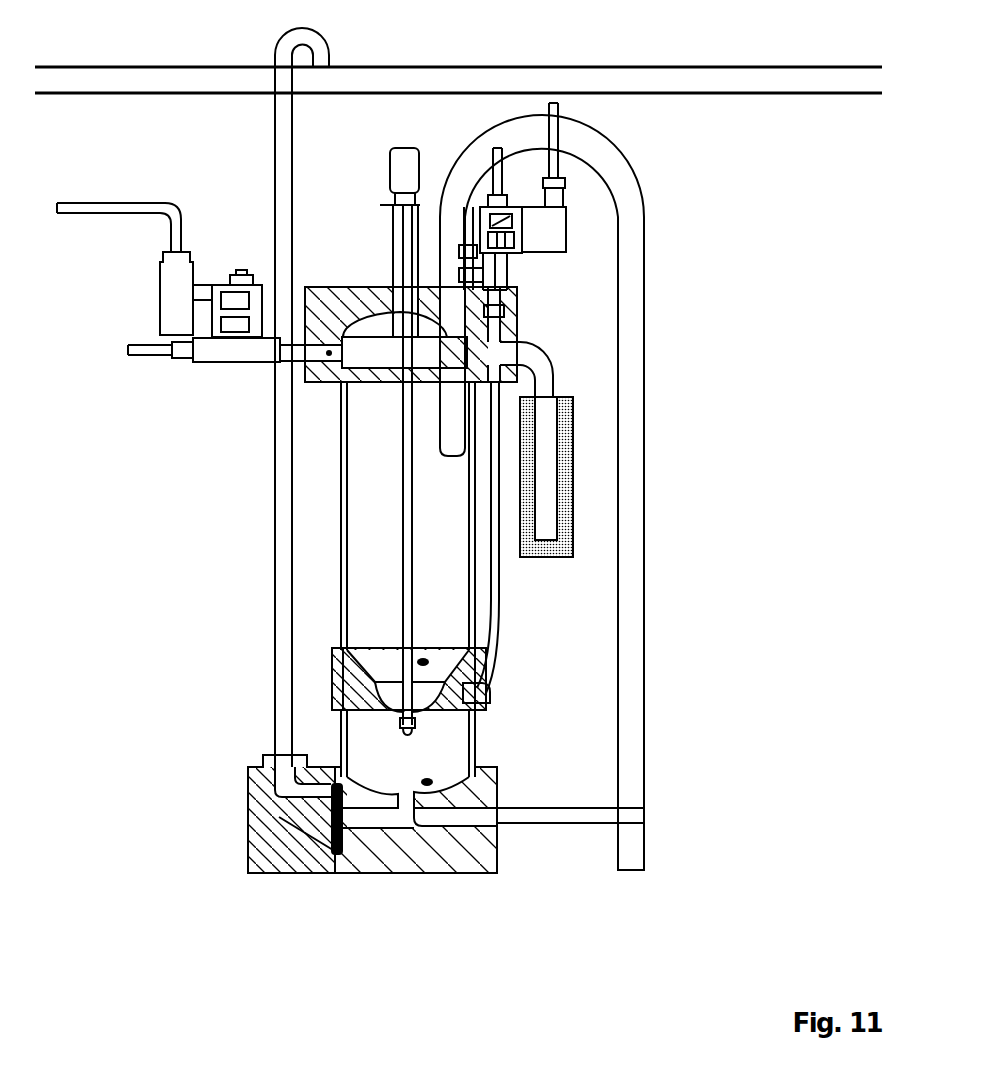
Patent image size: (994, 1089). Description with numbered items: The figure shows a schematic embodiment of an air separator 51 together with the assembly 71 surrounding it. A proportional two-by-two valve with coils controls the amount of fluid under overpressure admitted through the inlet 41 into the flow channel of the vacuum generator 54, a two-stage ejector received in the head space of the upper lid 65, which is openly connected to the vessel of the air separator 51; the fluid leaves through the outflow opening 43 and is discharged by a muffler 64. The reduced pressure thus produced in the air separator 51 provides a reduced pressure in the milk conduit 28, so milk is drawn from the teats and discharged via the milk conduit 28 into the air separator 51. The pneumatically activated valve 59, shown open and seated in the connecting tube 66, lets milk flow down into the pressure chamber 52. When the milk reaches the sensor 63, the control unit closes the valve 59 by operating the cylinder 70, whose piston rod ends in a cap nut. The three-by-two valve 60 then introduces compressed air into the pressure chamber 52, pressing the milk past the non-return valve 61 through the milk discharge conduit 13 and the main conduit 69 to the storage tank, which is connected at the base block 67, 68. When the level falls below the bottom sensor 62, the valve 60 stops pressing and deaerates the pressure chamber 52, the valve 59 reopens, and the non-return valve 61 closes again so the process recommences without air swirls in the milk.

The milk discharge conduit 13 is at (282, 735).
The milk conduit 28 is at (628, 366).
The inlet 41 is at (330, 346).
The outflow opening 43 is at (488, 340).
The air separator 51 is at (360, 462).
The pressure chamber 52 is at (365, 720).
The vacuum generator 54 is at (385, 348).
The valve 59 is at (488, 690).
The 3/2 valve 60 is at (553, 233).
The non-return valve 61 is at (331, 815).
The bottom sensor 62 is at (432, 781).
The sensor 63 is at (430, 661).
The muffler 64 is at (577, 497).
The upper lid 65 is at (336, 347).
The connecting tube 66 is at (347, 655).
The base block 67 is at (460, 850).
The base block left part 68 is at (255, 873).
The main conduit 69 is at (555, 82).
The cylinder 70 is at (404, 177).
The dosing device 71 is at (787, 363).